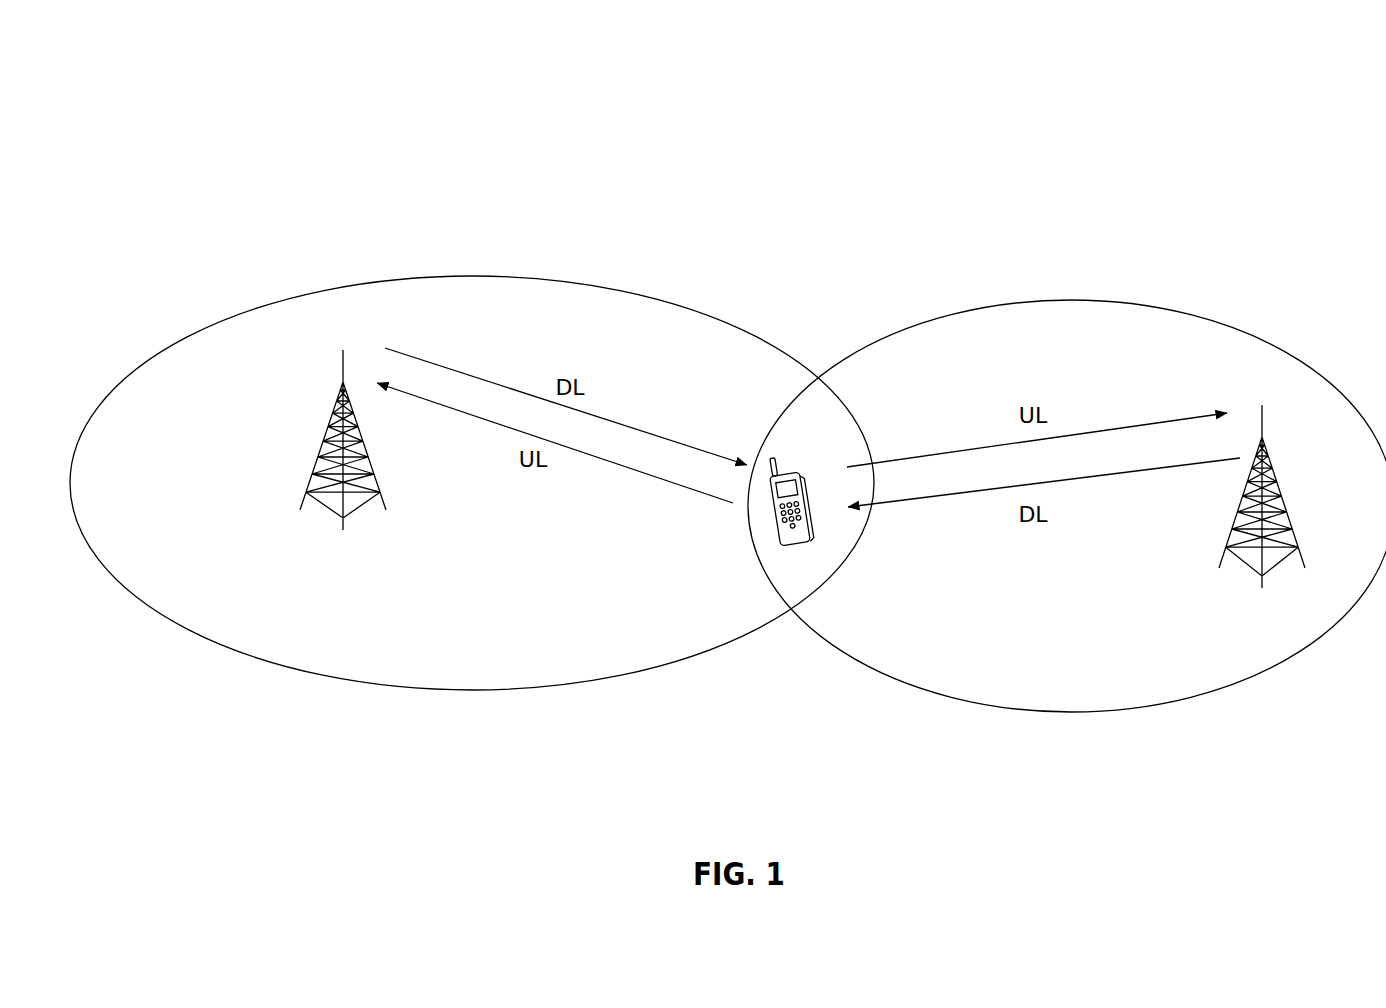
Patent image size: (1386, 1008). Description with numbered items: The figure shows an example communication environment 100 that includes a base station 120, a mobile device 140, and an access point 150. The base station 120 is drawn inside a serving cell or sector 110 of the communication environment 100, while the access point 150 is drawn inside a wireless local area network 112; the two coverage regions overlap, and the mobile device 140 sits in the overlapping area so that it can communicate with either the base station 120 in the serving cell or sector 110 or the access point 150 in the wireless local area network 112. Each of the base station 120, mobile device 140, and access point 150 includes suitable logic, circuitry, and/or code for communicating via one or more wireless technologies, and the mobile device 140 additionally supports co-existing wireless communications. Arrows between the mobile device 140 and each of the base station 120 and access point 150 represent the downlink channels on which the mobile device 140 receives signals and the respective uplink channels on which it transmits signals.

The communication environment 100 is at (1258, 83).
The serving cell or sector 110 is at (657, 300).
The wireless local area network 112 is at (1185, 308).
The base station 120 is at (343, 454).
The mobile device 140 is at (792, 514).
The access point 150 is at (1262, 509).